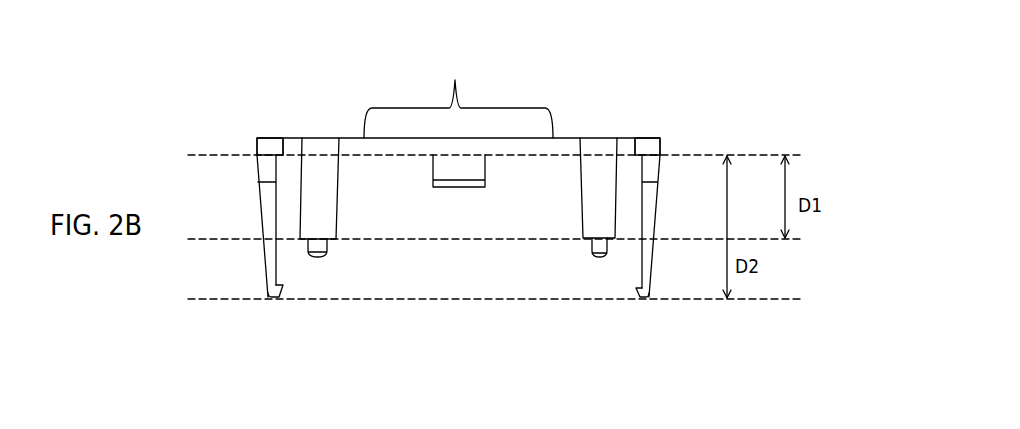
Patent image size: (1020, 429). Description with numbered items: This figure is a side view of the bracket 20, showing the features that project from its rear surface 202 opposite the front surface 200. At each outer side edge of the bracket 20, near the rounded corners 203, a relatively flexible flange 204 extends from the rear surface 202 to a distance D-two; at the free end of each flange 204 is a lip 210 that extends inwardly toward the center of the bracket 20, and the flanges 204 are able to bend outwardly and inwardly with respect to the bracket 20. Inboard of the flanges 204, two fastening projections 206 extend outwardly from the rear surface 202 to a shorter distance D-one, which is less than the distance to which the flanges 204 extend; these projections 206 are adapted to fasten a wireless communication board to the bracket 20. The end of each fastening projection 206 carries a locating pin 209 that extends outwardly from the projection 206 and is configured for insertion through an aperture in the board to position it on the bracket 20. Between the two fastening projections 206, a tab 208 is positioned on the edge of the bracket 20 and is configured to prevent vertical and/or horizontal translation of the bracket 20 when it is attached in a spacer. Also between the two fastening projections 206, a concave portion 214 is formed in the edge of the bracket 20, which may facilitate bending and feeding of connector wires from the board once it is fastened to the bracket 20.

The bracket 20 is at (185, 115).
The front surface 200 is at (287, 137).
The rear surface 202 is at (515, 160).
The rounded corners 203 is at (267, 148).
The flanges 204 is at (268, 240).
The fastening projections 206 is at (319, 160).
The tab 208 is at (460, 190).
The locating pin 209 is at (321, 255).
The lips 210 is at (279, 298).
The concave portion 214 is at (458, 94).